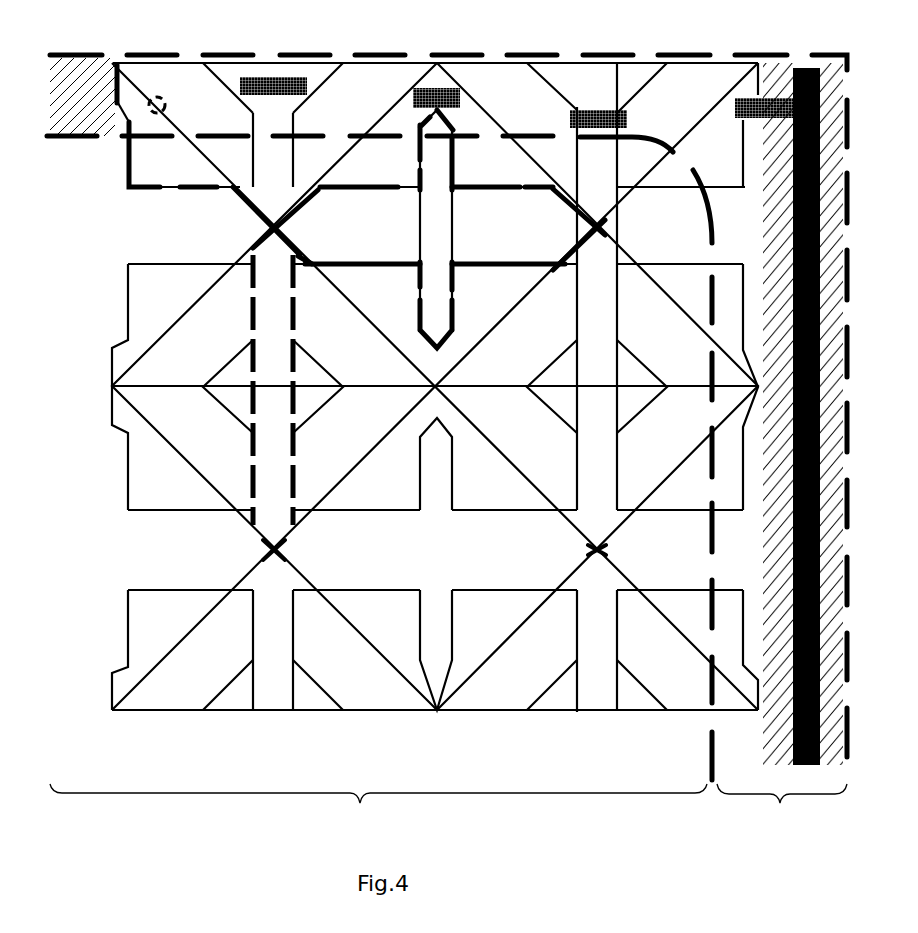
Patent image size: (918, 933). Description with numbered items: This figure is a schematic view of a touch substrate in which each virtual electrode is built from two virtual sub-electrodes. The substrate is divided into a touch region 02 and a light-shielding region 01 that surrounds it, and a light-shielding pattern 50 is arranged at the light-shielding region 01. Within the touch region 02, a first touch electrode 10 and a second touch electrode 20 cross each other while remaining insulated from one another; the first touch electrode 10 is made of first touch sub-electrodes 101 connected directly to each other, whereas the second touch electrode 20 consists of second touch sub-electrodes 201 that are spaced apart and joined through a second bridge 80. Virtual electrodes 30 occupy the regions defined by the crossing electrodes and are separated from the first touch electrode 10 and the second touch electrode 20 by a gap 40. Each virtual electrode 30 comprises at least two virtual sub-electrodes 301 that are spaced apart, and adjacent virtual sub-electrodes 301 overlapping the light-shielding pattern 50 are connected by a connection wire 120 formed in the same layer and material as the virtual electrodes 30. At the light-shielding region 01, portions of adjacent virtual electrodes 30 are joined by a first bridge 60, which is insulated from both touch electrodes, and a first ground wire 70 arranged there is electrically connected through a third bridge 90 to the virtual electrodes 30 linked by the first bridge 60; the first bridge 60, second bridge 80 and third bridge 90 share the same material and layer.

The first touch electrode 10 is at (267, 76).
The second touch electrode 20 is at (170, 562).
The virtual electrode 30 is at (122, 177).
The virtual sub-electrode 301 is at (158, 153).
The gap 40 is at (576, 118).
The light-shielding pattern 50 is at (77, 110).
The first bridge 60 is at (273, 77).
The first ground wire 70 is at (808, 70).
The second bridge 80 is at (270, 228).
The third bridge 90 is at (767, 95).
The first touch sub-electrode 101 is at (275, 305).
The connection wire 120 is at (161, 90).
The second touch sub-electrode 201 is at (372, 225).
The light-shielding region 01 is at (782, 450).
The touch region 02 is at (378, 810).